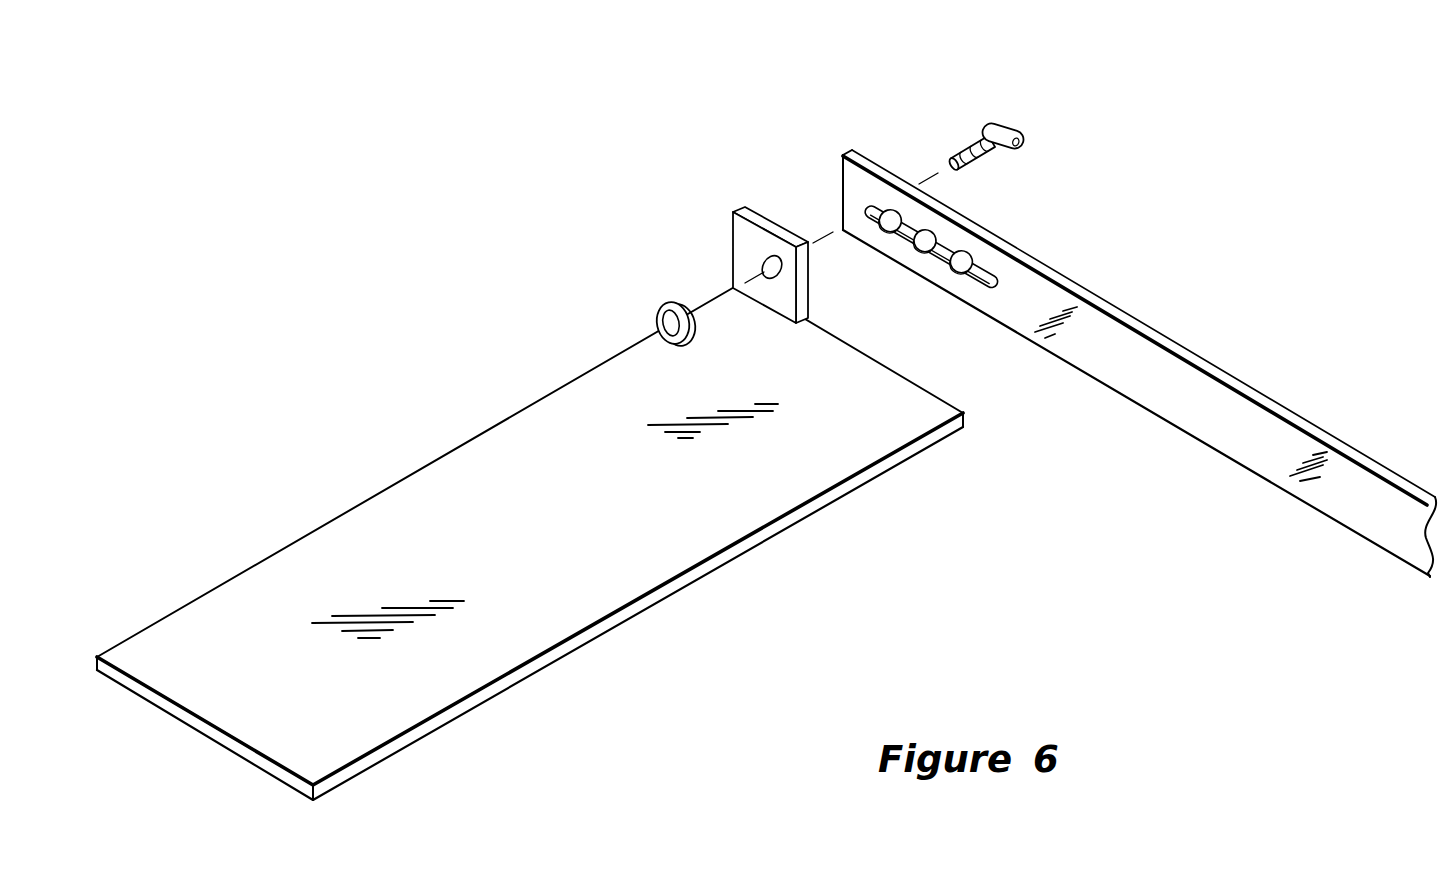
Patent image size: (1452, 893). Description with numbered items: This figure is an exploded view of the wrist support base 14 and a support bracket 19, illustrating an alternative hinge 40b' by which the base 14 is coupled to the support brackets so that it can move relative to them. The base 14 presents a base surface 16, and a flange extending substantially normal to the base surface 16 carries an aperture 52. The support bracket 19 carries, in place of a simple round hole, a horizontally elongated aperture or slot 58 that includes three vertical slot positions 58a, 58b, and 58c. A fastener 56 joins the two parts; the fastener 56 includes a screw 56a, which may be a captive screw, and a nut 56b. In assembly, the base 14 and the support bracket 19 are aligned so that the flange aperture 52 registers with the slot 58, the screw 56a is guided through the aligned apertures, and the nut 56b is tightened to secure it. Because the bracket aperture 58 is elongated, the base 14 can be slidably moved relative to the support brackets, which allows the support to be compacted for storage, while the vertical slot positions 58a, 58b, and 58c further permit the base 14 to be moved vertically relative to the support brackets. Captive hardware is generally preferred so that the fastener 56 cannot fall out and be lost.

The base 14 is at (530, 541).
The base surface 16 is at (603, 525).
The support bracket 19 is at (1139, 337).
The alternative hinge 40b' is at (800, 210).
The aperture 52 is at (768, 262).
The fastener 56 is at (973, 121).
The screw 56a is at (992, 123).
The nut 56b is at (660, 303).
The slot 58 is at (968, 194).
The vertical slot position 58a is at (906, 210).
The vertical slot position 58b is at (941, 232).
The vertical slot position 58c is at (978, 254).